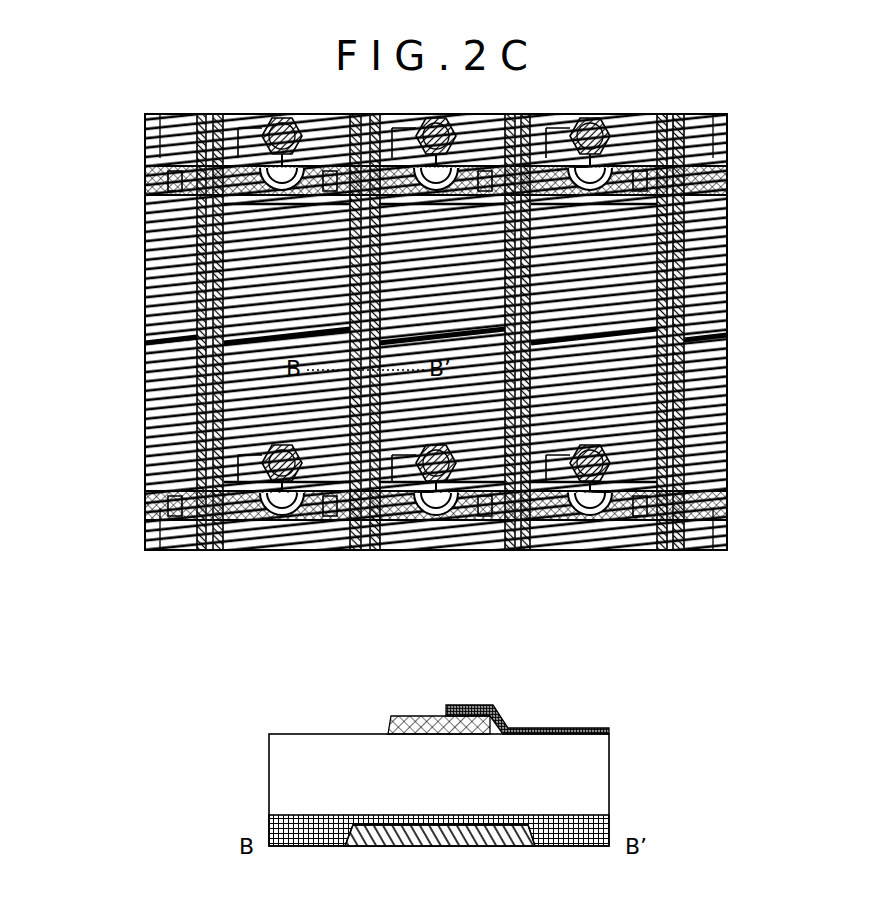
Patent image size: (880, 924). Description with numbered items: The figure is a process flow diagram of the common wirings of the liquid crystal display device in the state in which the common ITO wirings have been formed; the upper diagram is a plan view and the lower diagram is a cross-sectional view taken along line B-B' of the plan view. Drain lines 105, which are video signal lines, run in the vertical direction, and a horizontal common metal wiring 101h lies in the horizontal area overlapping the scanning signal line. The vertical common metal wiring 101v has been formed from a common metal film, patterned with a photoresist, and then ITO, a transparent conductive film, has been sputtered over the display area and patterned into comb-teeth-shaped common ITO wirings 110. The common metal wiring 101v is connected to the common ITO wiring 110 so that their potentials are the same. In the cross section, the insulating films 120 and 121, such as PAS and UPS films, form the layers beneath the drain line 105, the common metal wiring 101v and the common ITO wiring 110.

The common ITO wiring 110 is at (719, 251).
The horizontal common metal wiring 101h is at (122, 483).
The common metal wiring 101v is at (197, 545).
The drain line 105 is at (648, 545).
The insulating film 121 is at (585, 762).
The insulating film 120 is at (585, 820).